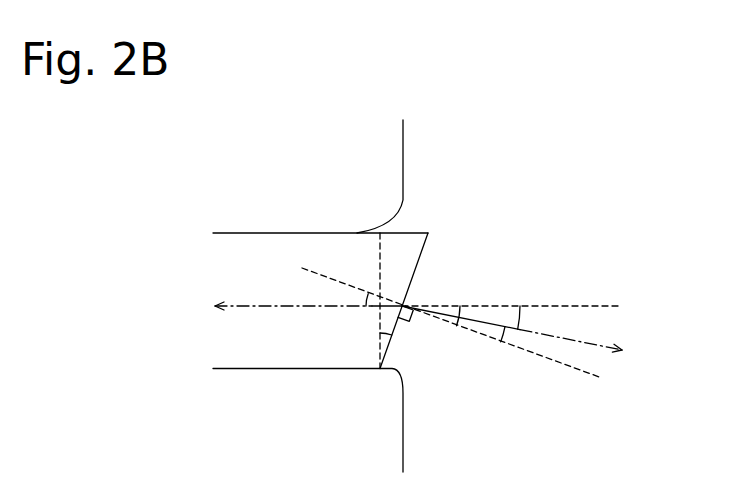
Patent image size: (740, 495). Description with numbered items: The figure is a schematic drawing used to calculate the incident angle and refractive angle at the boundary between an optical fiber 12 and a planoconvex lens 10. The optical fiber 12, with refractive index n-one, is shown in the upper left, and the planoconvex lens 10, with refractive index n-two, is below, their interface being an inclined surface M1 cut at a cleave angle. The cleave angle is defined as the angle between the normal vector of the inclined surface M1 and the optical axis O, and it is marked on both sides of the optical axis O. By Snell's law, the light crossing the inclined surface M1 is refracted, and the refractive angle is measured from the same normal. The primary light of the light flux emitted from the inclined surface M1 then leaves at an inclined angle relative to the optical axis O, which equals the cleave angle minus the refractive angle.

The optical fiber 12 is at (293, 249).
The planoconvex lens 10 is at (390, 408).
The inclined exit surface / mirror surface M1 is at (407, 298).
The optical axis O is at (598, 306).